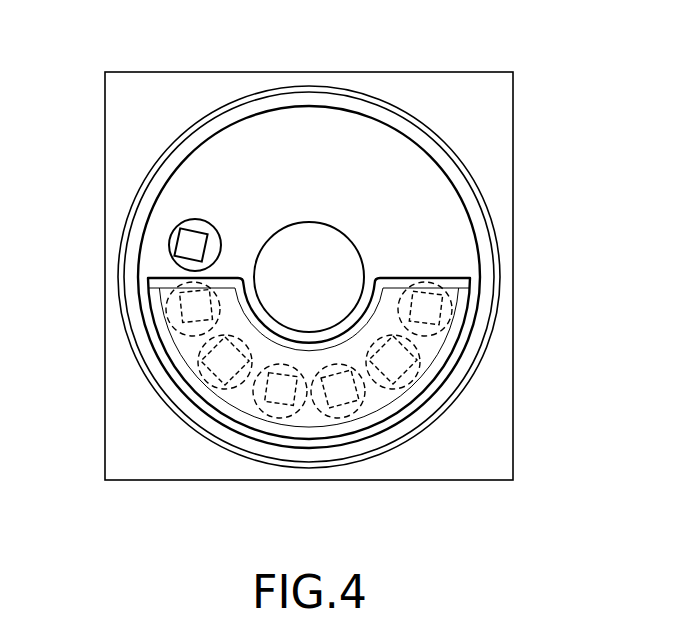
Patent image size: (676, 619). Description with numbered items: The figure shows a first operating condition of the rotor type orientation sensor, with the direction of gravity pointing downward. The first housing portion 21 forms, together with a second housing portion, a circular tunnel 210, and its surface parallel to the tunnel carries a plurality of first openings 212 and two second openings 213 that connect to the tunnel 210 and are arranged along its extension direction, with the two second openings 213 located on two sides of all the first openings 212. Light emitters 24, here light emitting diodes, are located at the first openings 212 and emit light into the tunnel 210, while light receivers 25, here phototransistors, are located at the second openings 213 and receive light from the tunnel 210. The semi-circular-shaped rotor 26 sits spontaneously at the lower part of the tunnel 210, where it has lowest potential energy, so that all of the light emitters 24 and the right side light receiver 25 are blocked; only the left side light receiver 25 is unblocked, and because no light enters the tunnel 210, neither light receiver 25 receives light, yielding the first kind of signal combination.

The first housing portion 21 is at (460, 90).
The circular tunnel 210 is at (447, 220).
The first openings 212 is at (245, 395).
The second openings 213 is at (192, 225).
The light emitters 24 is at (278, 397).
The light receivers 25 is at (182, 242).
The rotor 26 is at (155, 328).